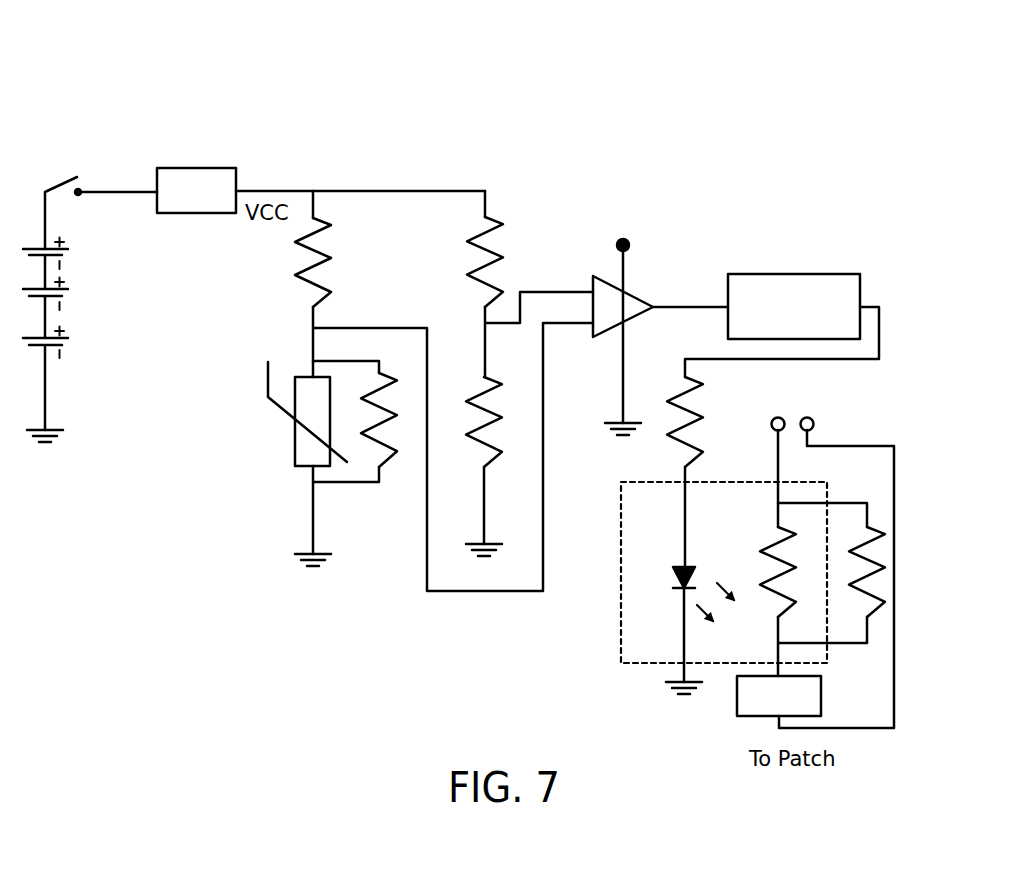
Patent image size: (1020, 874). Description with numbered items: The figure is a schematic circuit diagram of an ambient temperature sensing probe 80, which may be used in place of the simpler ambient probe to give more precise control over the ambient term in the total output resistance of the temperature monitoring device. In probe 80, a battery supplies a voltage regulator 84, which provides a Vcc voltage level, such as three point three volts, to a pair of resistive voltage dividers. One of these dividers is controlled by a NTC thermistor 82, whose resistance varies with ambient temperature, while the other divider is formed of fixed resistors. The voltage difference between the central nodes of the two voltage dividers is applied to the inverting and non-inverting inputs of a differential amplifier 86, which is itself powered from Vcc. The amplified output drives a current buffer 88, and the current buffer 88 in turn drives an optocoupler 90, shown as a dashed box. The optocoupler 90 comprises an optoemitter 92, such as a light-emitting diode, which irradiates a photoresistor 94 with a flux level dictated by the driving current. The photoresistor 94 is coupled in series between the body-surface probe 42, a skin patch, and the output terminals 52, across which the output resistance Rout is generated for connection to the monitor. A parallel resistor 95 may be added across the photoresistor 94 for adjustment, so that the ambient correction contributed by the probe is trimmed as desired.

The ambient temperature sensing probe 80 is at (122, 70).
The voltage regulator 84 is at (198, 168).
The NTC thermistor 82 is at (295, 455).
The differential amplifier 86 is at (642, 297).
The current buffer 88 is at (805, 274).
The terminals 52 is at (771, 424).
The optocoupler 90 is at (621, 660).
The optoemitter 92 is at (673, 578).
The photoresistor 94 is at (762, 541).
The parallel resistor 95 is at (884, 600).
The body-surface probe 42 is at (821, 693).